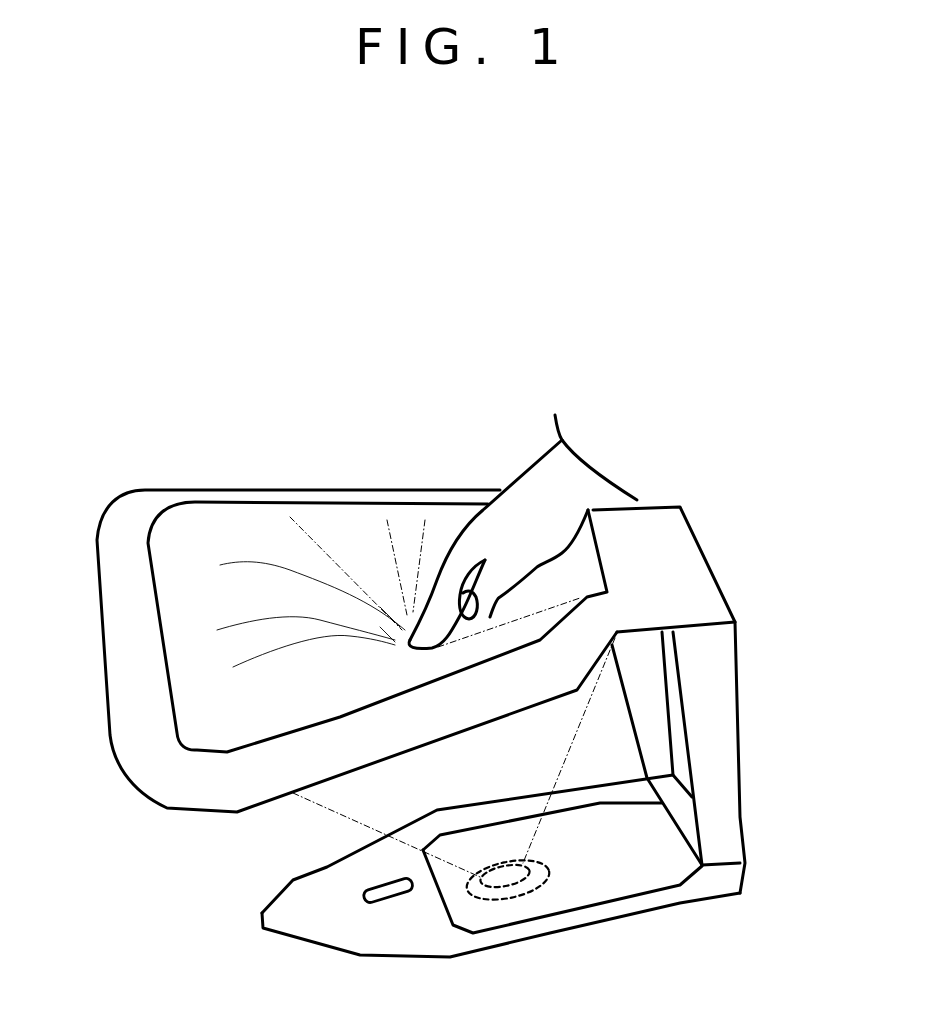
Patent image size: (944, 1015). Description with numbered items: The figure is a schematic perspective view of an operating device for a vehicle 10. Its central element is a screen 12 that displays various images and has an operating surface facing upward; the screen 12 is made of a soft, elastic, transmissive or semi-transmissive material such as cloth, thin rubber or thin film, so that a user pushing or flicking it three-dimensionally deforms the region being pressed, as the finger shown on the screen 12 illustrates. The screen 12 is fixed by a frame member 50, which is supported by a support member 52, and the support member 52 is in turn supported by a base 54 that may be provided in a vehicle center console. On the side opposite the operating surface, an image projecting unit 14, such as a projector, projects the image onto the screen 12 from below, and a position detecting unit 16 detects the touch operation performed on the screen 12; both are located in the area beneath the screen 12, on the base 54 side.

The operating device for a vehicle 10 is at (678, 340).
The screen 12 is at (228, 527).
The image projecting unit 14 is at (548, 868).
The position detecting unit 16 is at (375, 887).
The frame member 50 is at (117, 527).
The support member 52 is at (713, 687).
The base 54 is at (713, 893).